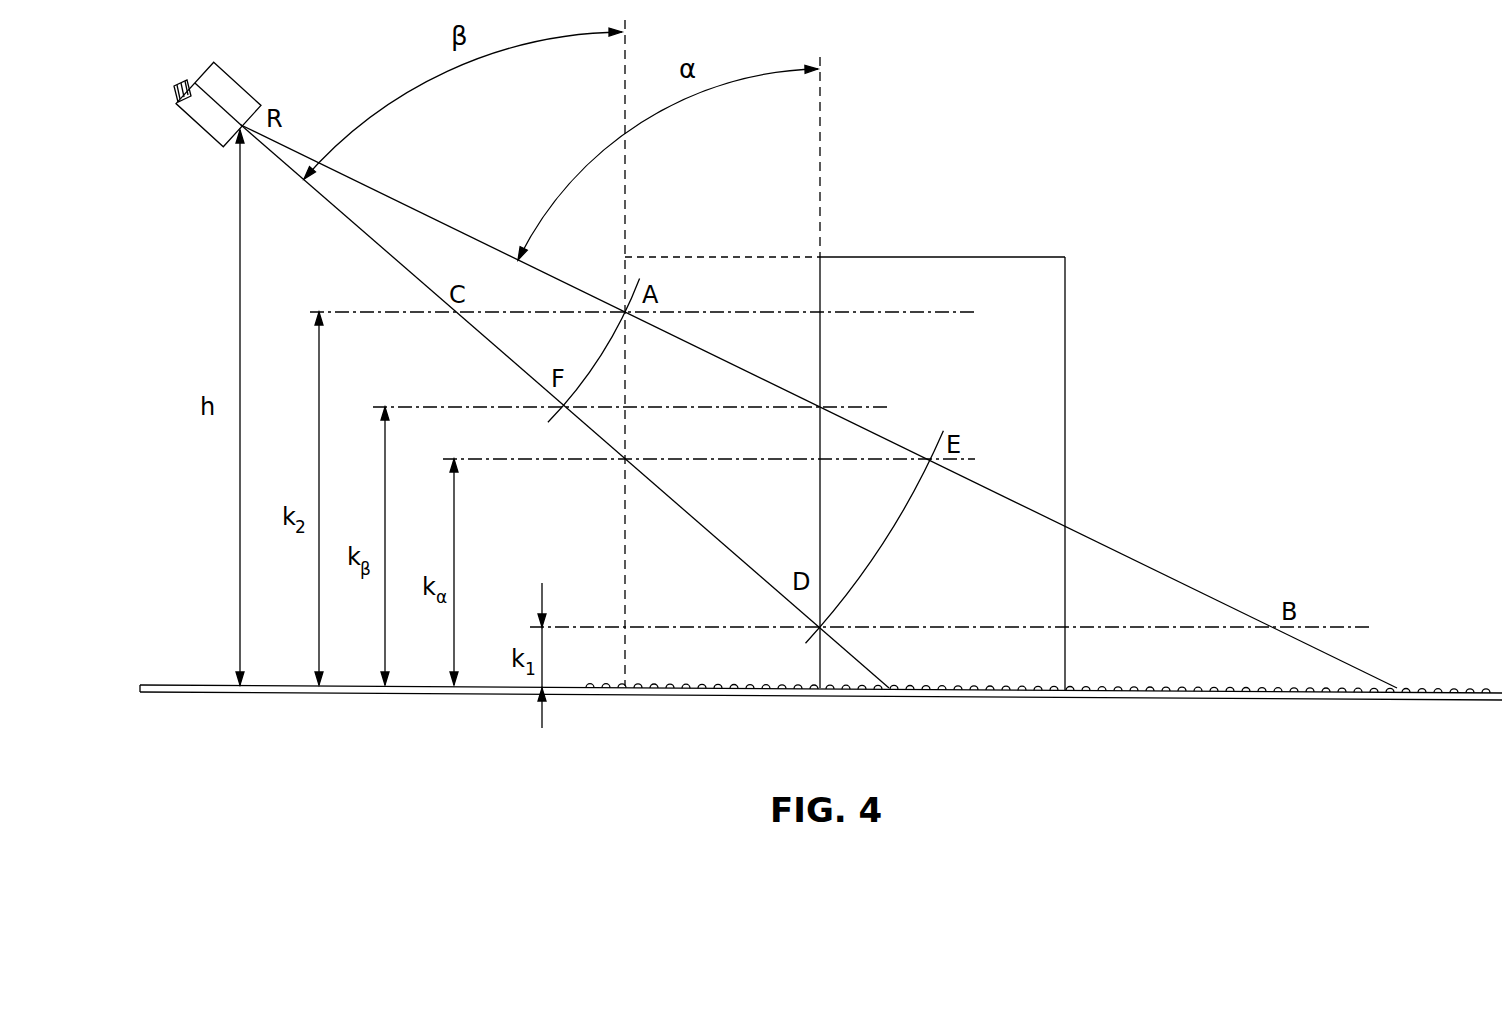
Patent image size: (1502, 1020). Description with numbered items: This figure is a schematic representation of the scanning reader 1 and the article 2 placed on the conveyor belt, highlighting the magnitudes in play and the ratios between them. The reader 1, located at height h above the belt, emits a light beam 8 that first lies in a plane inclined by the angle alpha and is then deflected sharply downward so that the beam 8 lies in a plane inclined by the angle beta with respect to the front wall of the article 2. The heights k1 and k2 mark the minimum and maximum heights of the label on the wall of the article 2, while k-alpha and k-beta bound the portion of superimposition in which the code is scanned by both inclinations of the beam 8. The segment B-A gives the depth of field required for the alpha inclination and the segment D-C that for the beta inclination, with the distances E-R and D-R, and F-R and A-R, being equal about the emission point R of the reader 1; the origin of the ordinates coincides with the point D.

The scanning reader 1 is at (222, 69).
The article 2 is at (1062, 254).
The light beam 8 is at (387, 196).